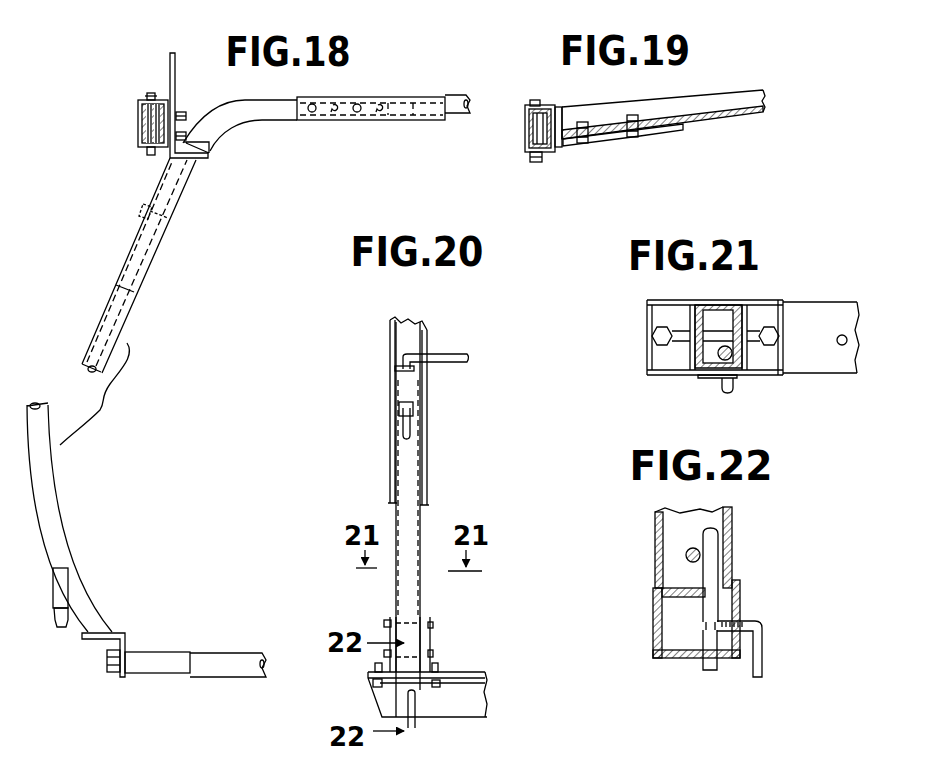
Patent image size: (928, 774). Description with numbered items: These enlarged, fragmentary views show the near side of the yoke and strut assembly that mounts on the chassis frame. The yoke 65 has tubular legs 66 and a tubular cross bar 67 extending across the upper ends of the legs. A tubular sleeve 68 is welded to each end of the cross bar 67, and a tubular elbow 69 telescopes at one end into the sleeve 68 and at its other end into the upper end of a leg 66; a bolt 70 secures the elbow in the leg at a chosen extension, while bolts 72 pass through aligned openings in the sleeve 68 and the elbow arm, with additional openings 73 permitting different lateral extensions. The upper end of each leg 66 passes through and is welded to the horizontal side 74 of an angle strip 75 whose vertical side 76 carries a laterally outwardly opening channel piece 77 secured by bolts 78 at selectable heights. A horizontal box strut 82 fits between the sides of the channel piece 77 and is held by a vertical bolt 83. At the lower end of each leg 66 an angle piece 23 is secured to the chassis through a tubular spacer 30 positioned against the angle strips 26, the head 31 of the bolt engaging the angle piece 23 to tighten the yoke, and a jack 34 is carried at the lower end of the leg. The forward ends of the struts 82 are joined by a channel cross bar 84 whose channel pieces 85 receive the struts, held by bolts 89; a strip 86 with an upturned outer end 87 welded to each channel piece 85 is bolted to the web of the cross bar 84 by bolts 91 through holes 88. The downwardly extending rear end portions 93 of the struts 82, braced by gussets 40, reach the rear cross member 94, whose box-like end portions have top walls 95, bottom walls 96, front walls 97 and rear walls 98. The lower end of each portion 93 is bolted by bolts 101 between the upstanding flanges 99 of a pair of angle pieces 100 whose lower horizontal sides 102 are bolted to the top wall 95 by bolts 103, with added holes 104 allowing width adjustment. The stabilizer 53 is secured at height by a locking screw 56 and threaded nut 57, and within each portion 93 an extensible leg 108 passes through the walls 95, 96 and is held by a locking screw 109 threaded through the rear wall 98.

In FIG. 18, the angle piece 23 is at (121, 631).
In FIG. 18, the angle strips 26 is at (214, 658).
In FIG. 18, the tubular spacers 30 is at (155, 651).
In FIG. 18, the bolt heads 31 is at (107, 666).
In FIG. 18, the jack 34 is at (56, 588).
In FIG. 20, the gussets 40 is at (393, 360).
In FIG. 20, the stabilizer 53 is at (445, 353).
In FIG. 20, the locking screw 56 is at (400, 411).
In FIG. 20, the threaded nut 57 is at (413, 414).
In FIG. 18, the yoke 65 is at (182, 202).
In FIG. 18, the legs 66 is at (144, 232).
In FIG. 18, the cross bar 67 is at (449, 94).
In FIG. 18, the tubular sleeve 68 is at (393, 97).
In FIG. 18, the tubular elbow 69 is at (258, 122).
In FIG. 18, the bolt 70 is at (144, 206).
In FIG. 18, the bolts 72 is at (357, 104).
In FIG. 18, the openings 73 is at (363, 122).
In FIG. 18, the horizontal side 74 is at (200, 162).
In FIG. 18, the angle strip 75 is at (169, 159).
In FIG. 18, the vertical side 76 is at (176, 90).
In FIG. 18, the channel piece 77 is at (162, 98).
In FIG. 18, the bolts 78 is at (187, 114).
In FIG. 18, the box struts 82 is at (138, 124).
In FIG. 20, the box struts 82 is at (406, 338).
In FIG. 18, the vertical bolt 83 is at (150, 92).
In FIG. 19, the channel cross bar 84 is at (699, 96).
In FIG. 19, the channel piece 85 is at (549, 158).
In FIG. 19, the strip 86 is at (657, 124).
In FIG. 19, the upturned outer end 87 is at (562, 118).
In FIG. 19, the holes 88 is at (660, 118).
In FIG. 19, the bolts 89 is at (534, 100).
In FIG. 19, the bolts 91 is at (623, 145).
In FIG. 20, the rear end portions 93 is at (416, 484).
In FIG. 22, the rear end portions 93 is at (658, 522).
In FIG. 20, the rear cross member 94 is at (472, 682).
In FIG. 21, the rear cross member 94 is at (805, 299).
In FIG. 22, the rear cross member 94 is at (652, 607).
In FIG. 21, the top walls 95 is at (812, 314).
In FIG. 22, the top walls 95 is at (680, 587).
In FIG. 22, the bottom walls 96 is at (680, 659).
In FIG. 22, the front walls 97 is at (655, 622).
In FIG. 22, the rear walls 98 is at (740, 616).
In FIG. 20, the upstanding flanges 99 is at (428, 620).
In FIG. 21, the upstanding flanges 99 is at (745, 318).
In FIG. 21, the angle pieces 100 is at (682, 366).
In FIG. 20, the bolts 101 is at (432, 656).
In FIG. 21, the bolts 101 is at (748, 347).
In FIG. 22, the bolts 101 is at (701, 555).
In FIG. 21, the lower horizontal sides 102 is at (652, 315).
In FIG. 21, the bolts 103 is at (655, 336).
In FIG. 21, the added holes 104 is at (840, 347).
In FIG. 22, the leg 108 is at (715, 578).
In FIG. 20, the locking screw 109 is at (426, 720).
In FIG. 21, the locking screw 109 is at (725, 389).
In FIG. 22, the locking screw 109 is at (762, 630).